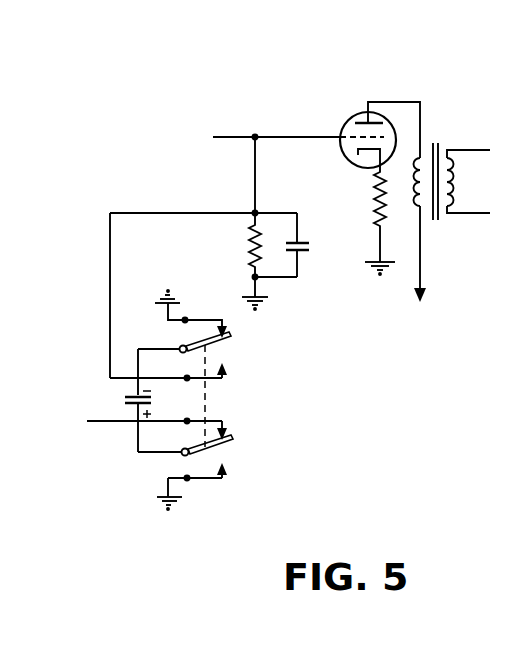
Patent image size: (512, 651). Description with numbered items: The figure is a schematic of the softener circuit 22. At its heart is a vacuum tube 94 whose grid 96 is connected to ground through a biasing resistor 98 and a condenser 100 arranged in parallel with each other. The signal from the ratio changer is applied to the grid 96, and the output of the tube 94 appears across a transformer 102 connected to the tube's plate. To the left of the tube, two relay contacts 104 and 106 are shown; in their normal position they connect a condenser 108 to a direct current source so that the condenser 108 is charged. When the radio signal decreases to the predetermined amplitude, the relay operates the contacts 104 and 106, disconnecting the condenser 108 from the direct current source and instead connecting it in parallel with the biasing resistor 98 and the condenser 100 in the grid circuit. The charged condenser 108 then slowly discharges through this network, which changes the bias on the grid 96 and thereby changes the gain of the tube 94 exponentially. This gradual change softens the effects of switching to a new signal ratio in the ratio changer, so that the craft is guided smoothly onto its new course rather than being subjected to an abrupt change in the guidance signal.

The softener circuit 22 is at (402, 44).
The vacuum tube 94 is at (345, 133).
The grid 96 is at (352, 119).
The biasing resistor 98 is at (248, 245).
The condenser 100 is at (305, 250).
The transformer 102 is at (438, 142).
The contact 104 is at (224, 344).
The contact 106 is at (222, 442).
The condenser 108 is at (122, 401).